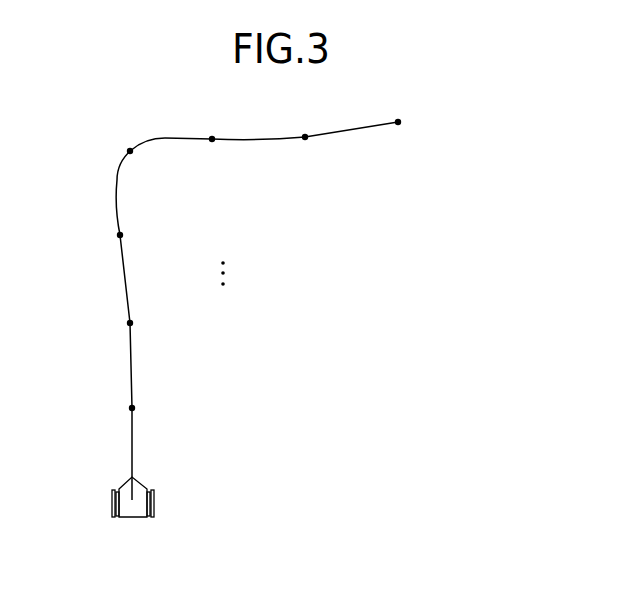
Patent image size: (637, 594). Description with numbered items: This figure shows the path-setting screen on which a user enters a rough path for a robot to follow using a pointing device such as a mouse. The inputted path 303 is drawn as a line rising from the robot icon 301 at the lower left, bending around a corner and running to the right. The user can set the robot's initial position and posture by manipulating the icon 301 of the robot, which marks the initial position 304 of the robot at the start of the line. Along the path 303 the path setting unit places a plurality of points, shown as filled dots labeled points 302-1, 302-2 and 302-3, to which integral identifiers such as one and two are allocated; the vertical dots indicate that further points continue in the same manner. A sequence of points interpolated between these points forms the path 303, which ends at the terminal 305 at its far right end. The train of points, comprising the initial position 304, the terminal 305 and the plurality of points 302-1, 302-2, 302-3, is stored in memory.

The icon of the robot 301 is at (137, 508).
The point 302-1 is at (132, 408).
The point 302-2 is at (130, 323).
The point 302-3 is at (120, 235).
The path 303 is at (163, 138).
The initial position 304 is at (125, 498).
The terminal of the path 305 is at (398, 122).